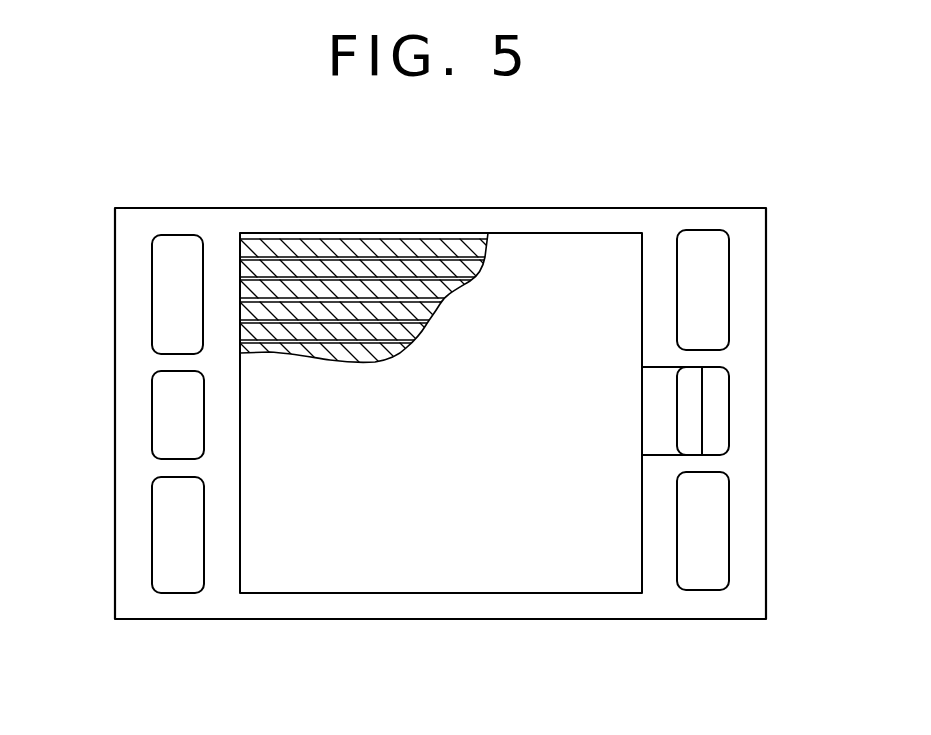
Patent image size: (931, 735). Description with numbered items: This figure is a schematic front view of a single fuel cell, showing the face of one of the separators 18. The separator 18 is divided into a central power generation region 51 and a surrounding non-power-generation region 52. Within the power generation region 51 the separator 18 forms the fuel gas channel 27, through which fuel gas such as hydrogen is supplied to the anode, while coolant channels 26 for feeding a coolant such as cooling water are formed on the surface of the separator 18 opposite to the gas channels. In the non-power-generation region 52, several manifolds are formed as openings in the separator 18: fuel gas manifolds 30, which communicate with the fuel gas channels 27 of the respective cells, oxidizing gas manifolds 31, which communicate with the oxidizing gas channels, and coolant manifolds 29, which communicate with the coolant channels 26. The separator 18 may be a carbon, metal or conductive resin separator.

The separator 18 is at (692, 208).
The coolant channel 26 is at (512, 242).
The fuel gas channel 27 is at (295, 268).
The power generation region 51 is at (542, 352).
The non-power-generation region 52 is at (132, 366).
The coolant manifold 29 is at (167, 541).
The fuel gas manifold 30 is at (165, 275).
The oxidizing gas manifold 31 is at (167, 414).